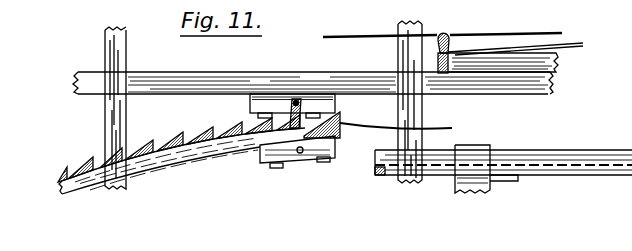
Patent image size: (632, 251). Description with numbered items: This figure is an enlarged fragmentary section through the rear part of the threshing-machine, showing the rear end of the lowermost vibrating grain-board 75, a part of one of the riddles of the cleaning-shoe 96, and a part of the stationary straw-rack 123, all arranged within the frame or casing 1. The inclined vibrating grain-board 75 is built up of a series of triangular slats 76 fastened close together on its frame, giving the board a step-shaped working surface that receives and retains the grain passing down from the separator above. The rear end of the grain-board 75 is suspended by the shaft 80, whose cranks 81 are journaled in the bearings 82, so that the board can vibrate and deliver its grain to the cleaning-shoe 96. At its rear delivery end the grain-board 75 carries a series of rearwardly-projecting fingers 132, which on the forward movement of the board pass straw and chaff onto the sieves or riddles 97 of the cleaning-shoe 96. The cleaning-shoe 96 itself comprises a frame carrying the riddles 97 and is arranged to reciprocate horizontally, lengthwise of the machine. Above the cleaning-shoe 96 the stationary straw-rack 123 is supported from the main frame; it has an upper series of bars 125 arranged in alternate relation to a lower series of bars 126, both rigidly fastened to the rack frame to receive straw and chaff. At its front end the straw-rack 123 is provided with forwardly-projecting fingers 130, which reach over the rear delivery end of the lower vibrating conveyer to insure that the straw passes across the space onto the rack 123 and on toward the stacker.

The frame or casing 1 is at (141, 82).
The vibrating grain-board 75 is at (84, 144).
The triangular slats 76 is at (242, 126).
The shaft 80 is at (302, 156).
The cranks 81 is at (300, 100).
The bearings 82 is at (268, 103).
The cleaning-shoe 96 is at (503, 160).
The sieves or riddles 97 is at (563, 178).
The stationary straw-rack 123 is at (526, 53).
The upper series of bars 125 is at (488, 26).
The lower series of bars 126 is at (582, 44).
The forwardly-projecting fingers 130 is at (362, 26).
The rearwardly-projecting fingers 132 is at (386, 121).